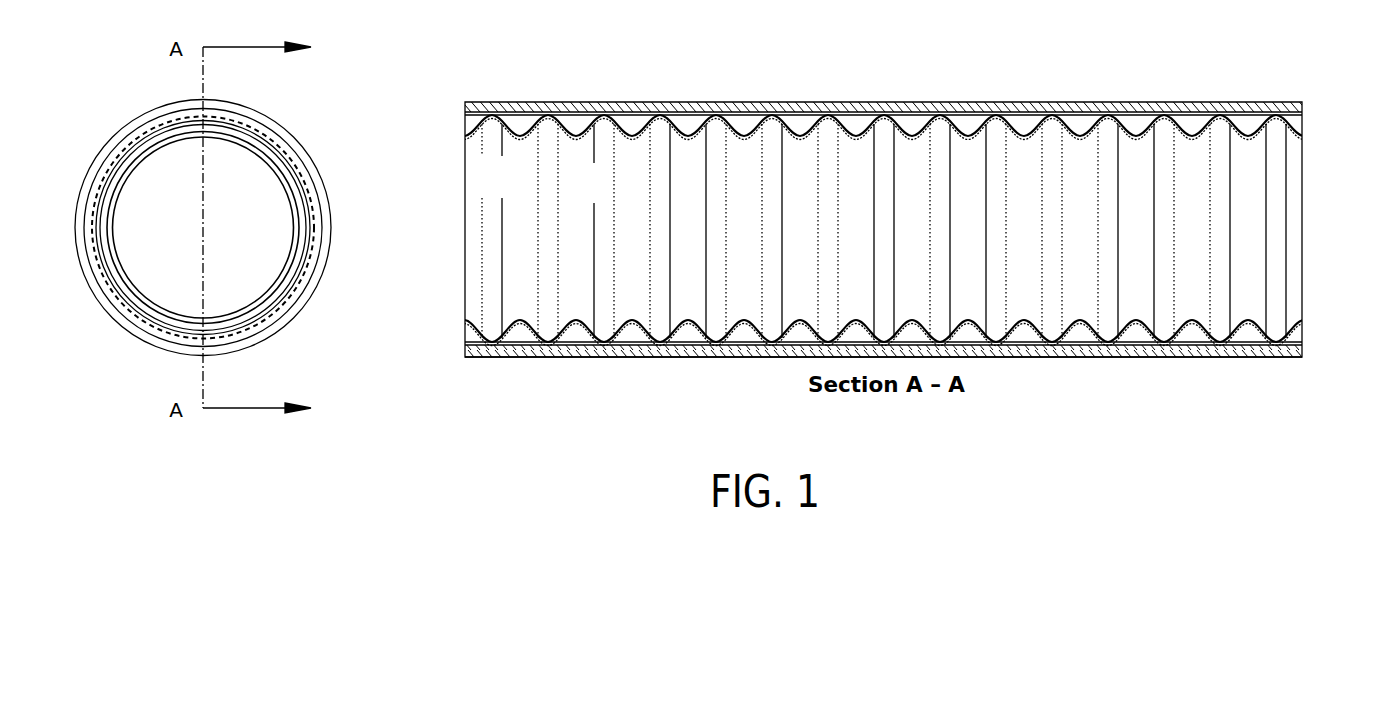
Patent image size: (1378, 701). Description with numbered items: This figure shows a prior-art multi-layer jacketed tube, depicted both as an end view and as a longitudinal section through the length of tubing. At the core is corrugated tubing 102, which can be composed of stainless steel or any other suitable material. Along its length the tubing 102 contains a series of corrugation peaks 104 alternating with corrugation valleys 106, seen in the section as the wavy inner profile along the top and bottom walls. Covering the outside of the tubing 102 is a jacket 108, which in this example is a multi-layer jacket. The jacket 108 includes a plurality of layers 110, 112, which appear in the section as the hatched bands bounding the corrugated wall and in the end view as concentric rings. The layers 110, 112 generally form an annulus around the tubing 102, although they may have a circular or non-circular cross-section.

The corrugated tubing 102 is at (135, 291).
The corrugation peaks 104 is at (488, 130).
The corrugation valleys 106 is at (576, 141).
The jacket 108 is at (452, 346).
The layer 110 is at (884, 333).
The layer 112 is at (1300, 361).